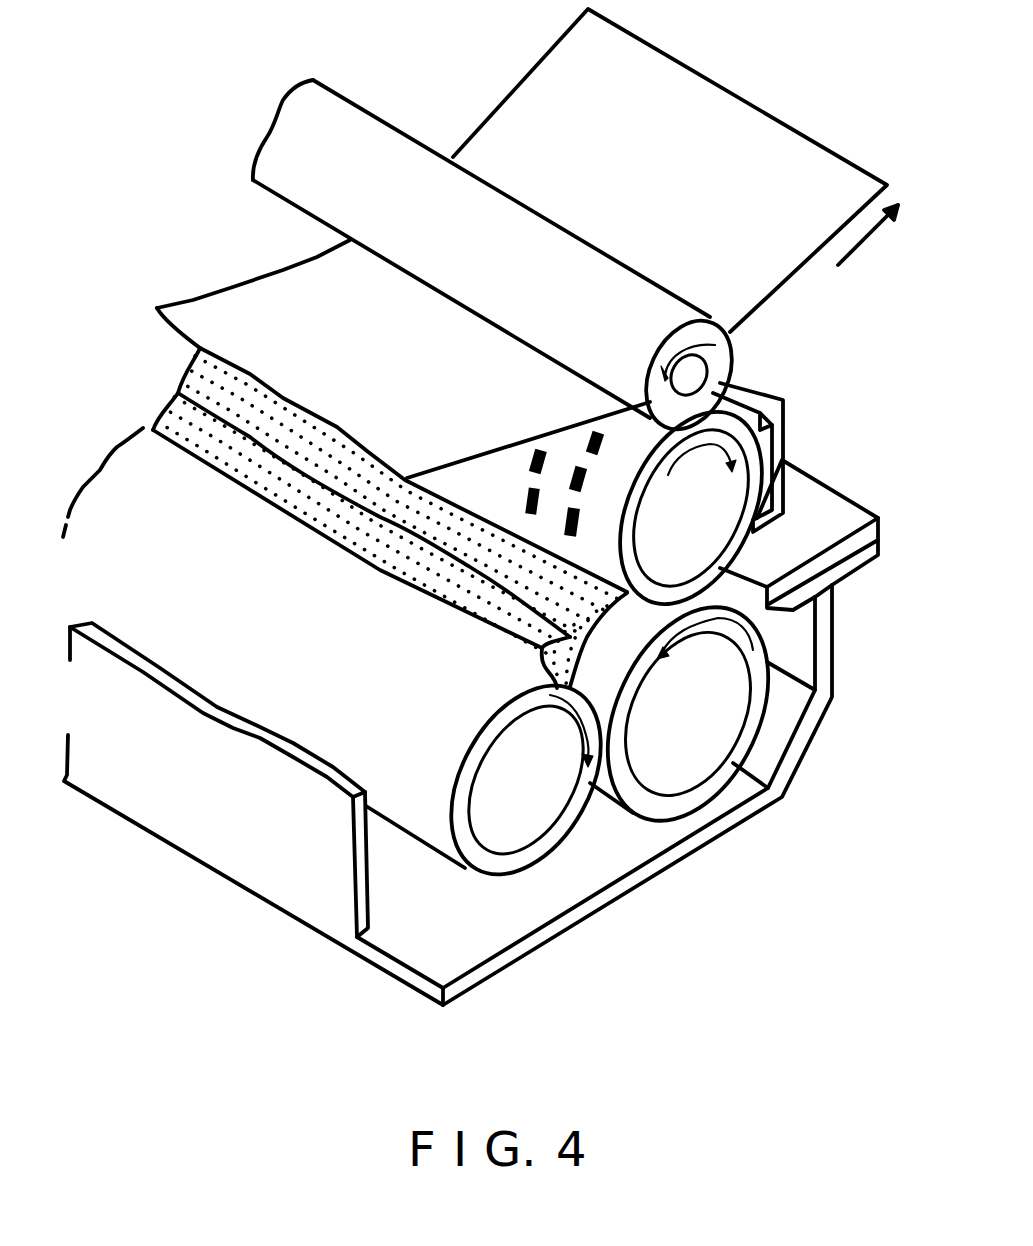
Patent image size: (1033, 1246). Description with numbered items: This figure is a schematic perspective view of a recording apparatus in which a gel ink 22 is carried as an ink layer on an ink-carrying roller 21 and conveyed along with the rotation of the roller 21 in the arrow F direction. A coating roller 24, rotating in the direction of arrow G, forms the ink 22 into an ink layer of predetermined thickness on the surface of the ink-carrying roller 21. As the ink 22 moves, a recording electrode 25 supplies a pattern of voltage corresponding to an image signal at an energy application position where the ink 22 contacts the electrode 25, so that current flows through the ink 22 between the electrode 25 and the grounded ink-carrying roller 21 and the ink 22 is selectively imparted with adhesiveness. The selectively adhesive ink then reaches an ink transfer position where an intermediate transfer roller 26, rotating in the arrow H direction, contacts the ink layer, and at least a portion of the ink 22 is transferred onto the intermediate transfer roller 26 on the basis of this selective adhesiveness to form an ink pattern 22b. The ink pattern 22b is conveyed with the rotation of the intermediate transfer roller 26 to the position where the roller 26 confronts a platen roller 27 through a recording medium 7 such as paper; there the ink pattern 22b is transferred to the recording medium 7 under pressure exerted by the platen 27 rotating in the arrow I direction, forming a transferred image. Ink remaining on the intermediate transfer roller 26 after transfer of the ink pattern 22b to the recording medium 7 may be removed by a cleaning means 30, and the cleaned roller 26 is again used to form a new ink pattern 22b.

The recording medium 7 is at (762, 138).
The ink-carrying roller 21 is at (600, 780).
The ink 22 is at (570, 587).
The ink pattern 22b is at (575, 477).
The coating roller 24 is at (426, 822).
The recording electrode 25 is at (830, 514).
The intermediate transfer roller 26 is at (634, 504).
The platen roller 27 is at (592, 276).
The cleaning means 30 is at (780, 410).